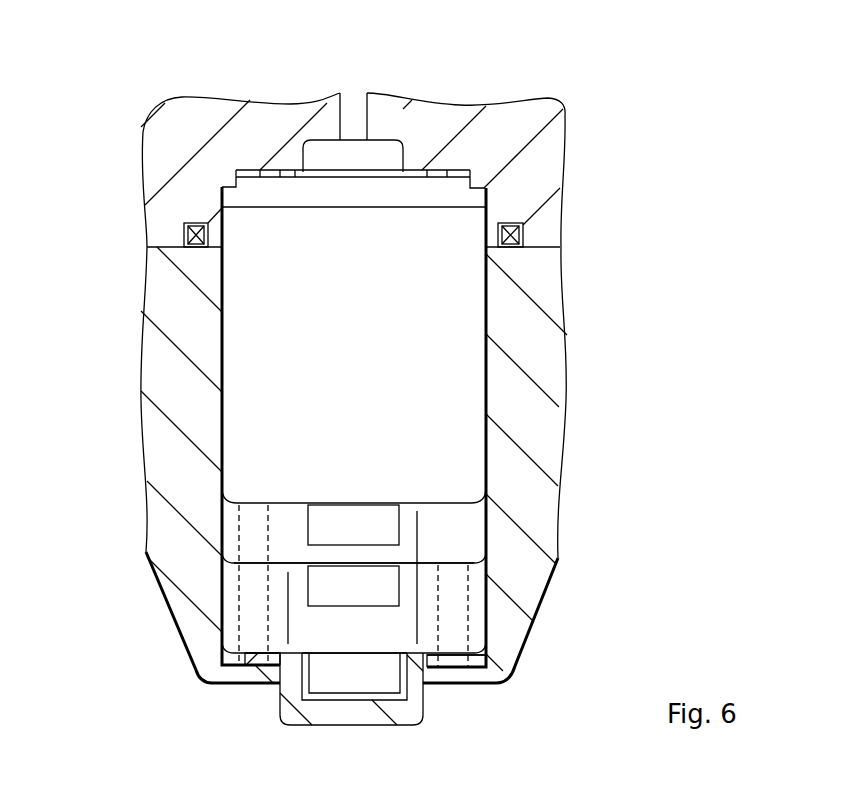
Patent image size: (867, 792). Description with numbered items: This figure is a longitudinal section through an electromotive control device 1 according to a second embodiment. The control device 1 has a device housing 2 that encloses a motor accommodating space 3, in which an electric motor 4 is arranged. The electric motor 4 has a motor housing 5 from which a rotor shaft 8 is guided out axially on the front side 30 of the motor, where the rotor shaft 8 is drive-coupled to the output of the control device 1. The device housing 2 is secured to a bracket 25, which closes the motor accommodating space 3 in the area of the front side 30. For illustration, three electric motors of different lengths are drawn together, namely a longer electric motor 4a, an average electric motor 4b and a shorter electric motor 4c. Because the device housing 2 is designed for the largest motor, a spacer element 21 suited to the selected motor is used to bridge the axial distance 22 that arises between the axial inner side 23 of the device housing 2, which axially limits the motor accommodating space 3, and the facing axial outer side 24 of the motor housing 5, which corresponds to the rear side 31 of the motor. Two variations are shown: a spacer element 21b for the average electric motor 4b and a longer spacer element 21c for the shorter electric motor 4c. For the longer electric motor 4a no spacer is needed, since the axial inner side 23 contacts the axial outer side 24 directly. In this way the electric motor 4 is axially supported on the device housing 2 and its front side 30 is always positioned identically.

The control device 1 is at (381, 389).
The device housing 2 is at (548, 352).
The motor accommodating space 3 is at (473, 380).
The electric motor 4 is at (354, 602).
The longer electric motor 4a is at (376, 687).
The average electric motor 4b is at (376, 600).
The shorter electric motor 4c is at (376, 538).
The motor housing 5 is at (236, 388).
The rotor shaft 8 is at (353, 112).
The spacer element 21 is at (354, 586).
The spacer element for the average electric motor 21b is at (455, 616).
The longer spacer element 21c is at (257, 531).
The axial distance 22 is at (418, 578).
The axial inner side 23 is at (447, 663).
The axial outer side 24 is at (342, 598).
The bracket 25 is at (185, 135).
The front side 30 is at (279, 174).
The rear side 31 is at (436, 505).